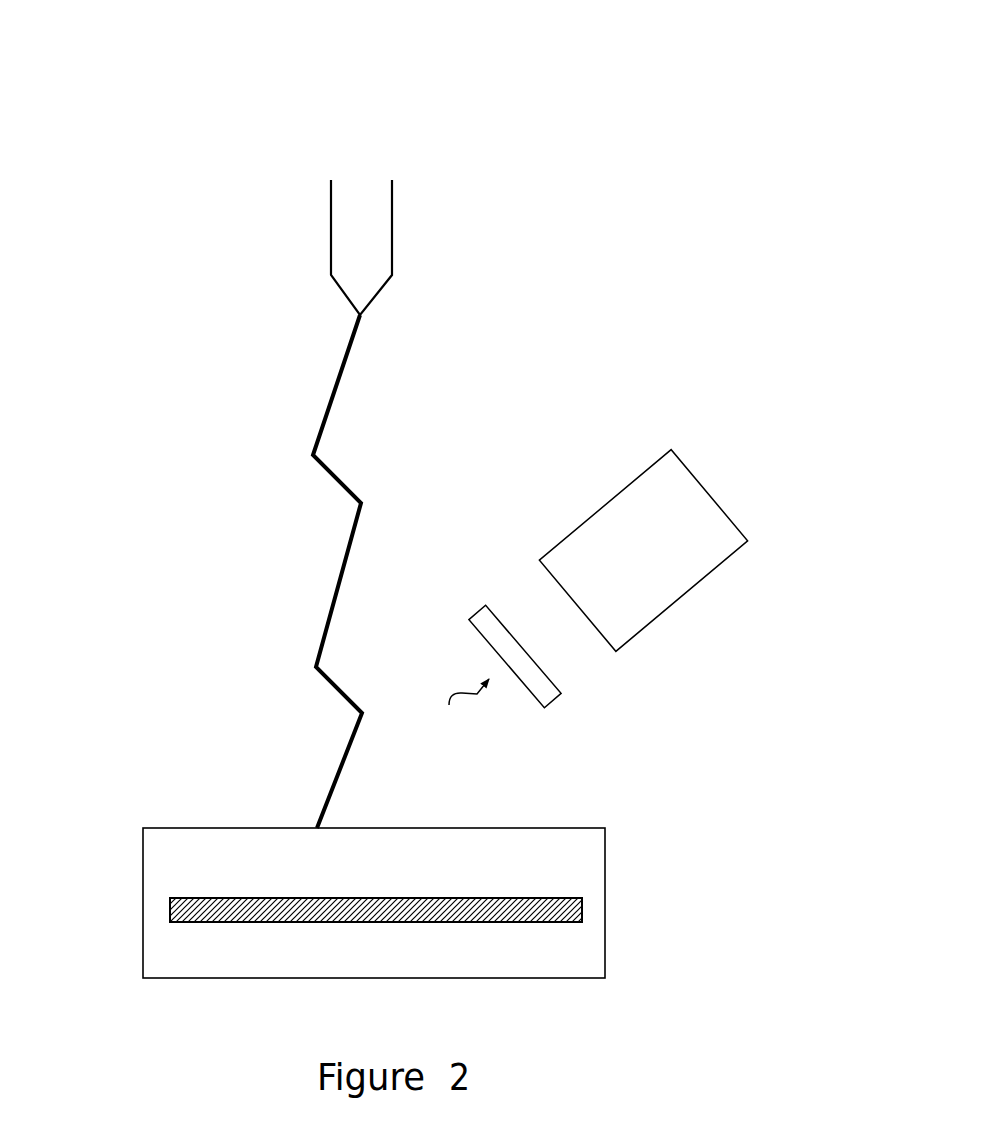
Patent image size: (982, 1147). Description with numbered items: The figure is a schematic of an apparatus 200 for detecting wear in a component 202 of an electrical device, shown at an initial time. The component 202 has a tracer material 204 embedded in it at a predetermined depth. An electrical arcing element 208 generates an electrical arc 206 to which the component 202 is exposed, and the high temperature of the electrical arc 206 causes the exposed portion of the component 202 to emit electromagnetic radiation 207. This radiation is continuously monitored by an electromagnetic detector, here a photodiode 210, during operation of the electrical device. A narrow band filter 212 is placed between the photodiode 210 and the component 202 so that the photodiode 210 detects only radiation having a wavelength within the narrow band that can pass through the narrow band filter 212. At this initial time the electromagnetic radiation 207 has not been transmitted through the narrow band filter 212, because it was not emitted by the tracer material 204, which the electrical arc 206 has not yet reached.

The apparatus 200 is at (243, 221).
The component 202 is at (605, 828).
The tracer material 204 is at (582, 922).
The electrical arc 206 is at (322, 428).
The electromagnetic radiation 207 is at (477, 694).
The electrical arcing element 208 is at (393, 242).
The photodiode 210 is at (693, 473).
The narrow band filter 212 is at (478, 608).